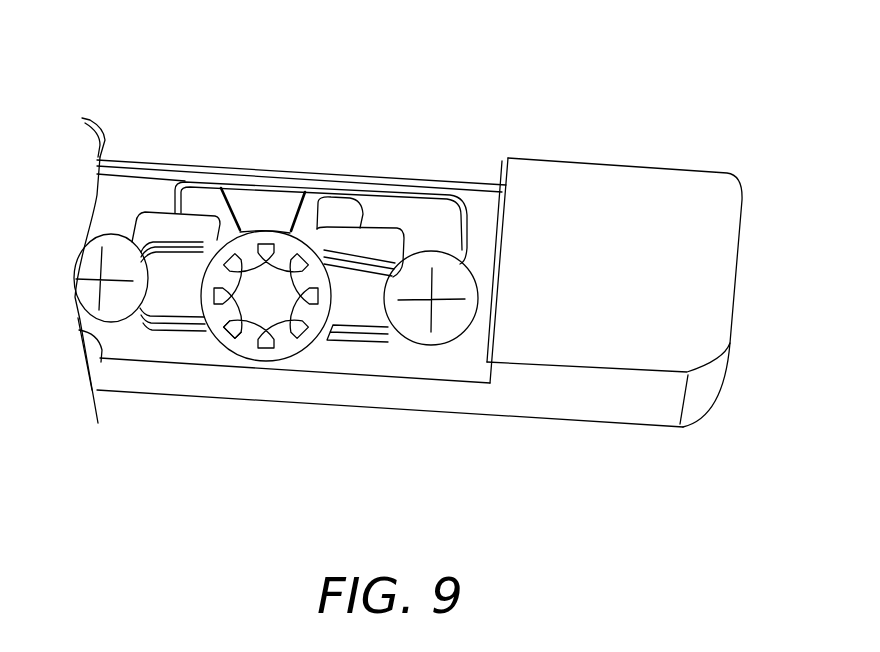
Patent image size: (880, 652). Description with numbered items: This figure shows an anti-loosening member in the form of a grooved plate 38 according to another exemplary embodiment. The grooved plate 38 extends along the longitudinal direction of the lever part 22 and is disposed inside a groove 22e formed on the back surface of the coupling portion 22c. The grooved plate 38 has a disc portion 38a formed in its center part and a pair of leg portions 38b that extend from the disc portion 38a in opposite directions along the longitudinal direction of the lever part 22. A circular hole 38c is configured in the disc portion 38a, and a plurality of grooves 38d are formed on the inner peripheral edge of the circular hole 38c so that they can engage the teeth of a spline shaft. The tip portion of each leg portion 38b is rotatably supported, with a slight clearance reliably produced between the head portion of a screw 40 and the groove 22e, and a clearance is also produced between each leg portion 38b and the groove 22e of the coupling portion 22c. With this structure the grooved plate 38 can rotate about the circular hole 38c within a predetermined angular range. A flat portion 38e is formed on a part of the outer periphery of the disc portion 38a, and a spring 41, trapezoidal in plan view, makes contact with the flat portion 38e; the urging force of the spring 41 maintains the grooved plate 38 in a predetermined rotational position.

The lever part 22 is at (670, 164).
The coupling portion 22c is at (470, 190).
The groove 22e is at (183, 308).
The grooved plate 38 is at (322, 350).
The disc portion 38a is at (313, 251).
The leg portions 38b is at (168, 272).
The circular hole 38c is at (270, 305).
The grooves 38d is at (249, 350).
The flat portion 38e is at (300, 203).
The screw 40 is at (77, 297).
The spring 41 is at (235, 186).